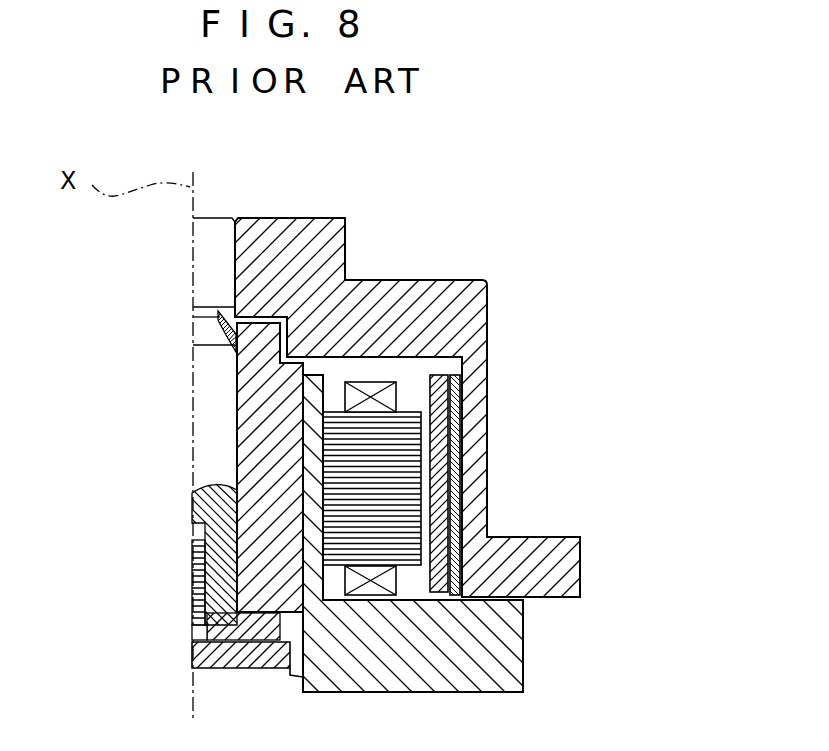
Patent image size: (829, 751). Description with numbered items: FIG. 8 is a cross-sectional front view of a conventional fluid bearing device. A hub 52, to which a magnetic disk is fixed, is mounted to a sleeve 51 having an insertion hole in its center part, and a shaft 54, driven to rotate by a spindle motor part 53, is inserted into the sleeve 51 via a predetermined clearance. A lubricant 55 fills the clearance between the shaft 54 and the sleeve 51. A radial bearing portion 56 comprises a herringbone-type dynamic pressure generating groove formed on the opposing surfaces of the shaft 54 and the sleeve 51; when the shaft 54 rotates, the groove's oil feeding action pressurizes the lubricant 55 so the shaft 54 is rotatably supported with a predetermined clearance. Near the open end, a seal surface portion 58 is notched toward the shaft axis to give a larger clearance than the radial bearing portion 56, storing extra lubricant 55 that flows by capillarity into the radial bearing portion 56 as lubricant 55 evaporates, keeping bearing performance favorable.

The sleeve 51 is at (280, 473).
The hub 52 is at (300, 248).
The spindle motor part 53 is at (412, 388).
The shaft 54 is at (205, 438).
The lubricant 55 is at (205, 503).
The radial bearing portion 56 is at (235, 366).
The seal surface portion 58 is at (233, 313).